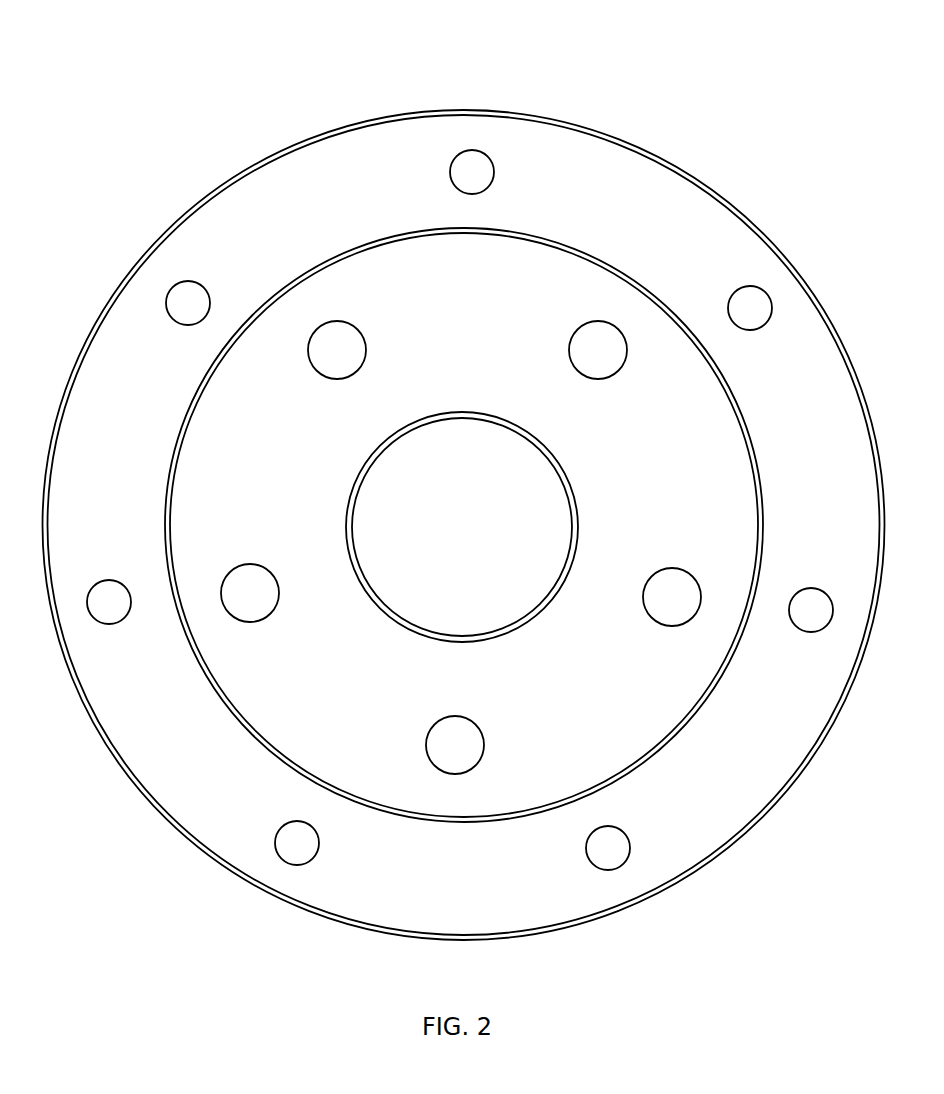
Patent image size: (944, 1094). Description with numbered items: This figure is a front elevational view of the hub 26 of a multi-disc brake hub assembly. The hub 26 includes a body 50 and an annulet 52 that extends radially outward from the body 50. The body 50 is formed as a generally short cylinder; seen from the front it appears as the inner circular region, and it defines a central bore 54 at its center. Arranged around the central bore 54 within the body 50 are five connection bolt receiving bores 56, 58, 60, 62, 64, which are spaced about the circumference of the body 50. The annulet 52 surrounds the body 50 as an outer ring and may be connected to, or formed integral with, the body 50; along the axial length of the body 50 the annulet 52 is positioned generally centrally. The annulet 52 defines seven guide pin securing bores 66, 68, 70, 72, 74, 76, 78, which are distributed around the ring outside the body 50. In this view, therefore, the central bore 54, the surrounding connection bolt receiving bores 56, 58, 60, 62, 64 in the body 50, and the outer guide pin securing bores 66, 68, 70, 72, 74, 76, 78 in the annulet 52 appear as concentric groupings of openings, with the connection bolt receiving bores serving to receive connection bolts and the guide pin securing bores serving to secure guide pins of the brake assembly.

The hub 26 is at (208, 108).
The body 50 is at (593, 253).
The annulet 52 is at (683, 168).
The central bore 54 is at (466, 418).
The connection bolt receiving bore 56 is at (366, 345).
The connection bolt receiving bore 58 is at (612, 378).
The connection bolt receiving bore 60 is at (650, 618).
The connection bolt receiving bore 62 is at (428, 735).
The connection bolt receiving bore 64 is at (252, 564).
The guide pin securing bore 66 is at (494, 175).
The guide pin securing bore 68 is at (765, 327).
The guide pin securing bore 70 is at (803, 632).
The guide pin securing bore 72 is at (586, 855).
The guide pin securing bore 74 is at (275, 838).
The guide pin securing bore 76 is at (108, 580).
The guide pin securing bore 78 is at (205, 285).